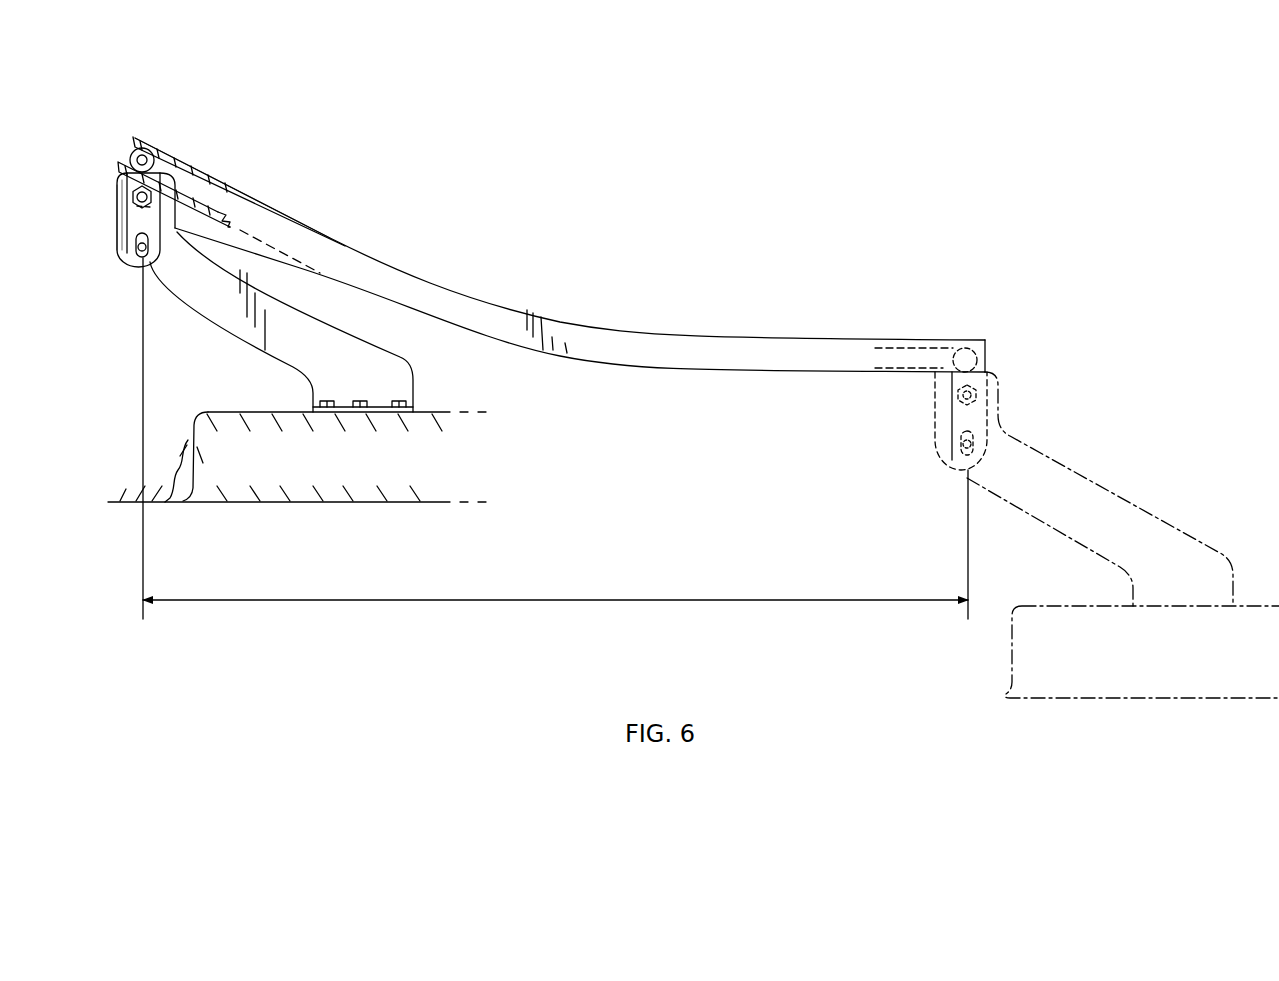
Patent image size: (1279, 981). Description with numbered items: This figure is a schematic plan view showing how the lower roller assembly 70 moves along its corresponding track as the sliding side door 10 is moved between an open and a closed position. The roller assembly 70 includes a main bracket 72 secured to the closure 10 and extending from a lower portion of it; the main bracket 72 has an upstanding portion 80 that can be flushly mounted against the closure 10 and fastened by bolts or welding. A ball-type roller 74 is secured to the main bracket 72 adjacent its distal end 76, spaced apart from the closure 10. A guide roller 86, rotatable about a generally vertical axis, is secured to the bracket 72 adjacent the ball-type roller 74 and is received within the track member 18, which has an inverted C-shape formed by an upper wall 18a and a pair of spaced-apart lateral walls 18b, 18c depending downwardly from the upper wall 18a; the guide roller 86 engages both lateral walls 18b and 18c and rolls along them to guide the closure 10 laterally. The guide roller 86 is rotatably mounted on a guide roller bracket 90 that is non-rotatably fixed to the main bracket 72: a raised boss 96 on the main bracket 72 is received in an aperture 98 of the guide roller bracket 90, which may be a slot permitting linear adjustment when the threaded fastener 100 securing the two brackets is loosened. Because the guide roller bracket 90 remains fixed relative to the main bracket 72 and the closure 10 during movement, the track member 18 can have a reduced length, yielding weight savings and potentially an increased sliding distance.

The sliding side door 10 is at (396, 507).
The track member 18 is at (484, 296).
The upper wall 18a is at (325, 256).
The lateral wall 18b is at (218, 180).
The lateral wall 18c is at (230, 196).
The roller assembly 70 is at (106, 166).
The main bracket 72 is at (234, 337).
The ball-type roller 74 is at (115, 220).
The distal end 76 is at (126, 186).
The upstanding portion 80 is at (380, 406).
The guide roller 86 is at (150, 158).
The guide roller bracket 90 is at (165, 239).
The raised boss 96 is at (140, 249).
The aperture 98 is at (146, 268).
The threaded fastener 100 is at (137, 193).